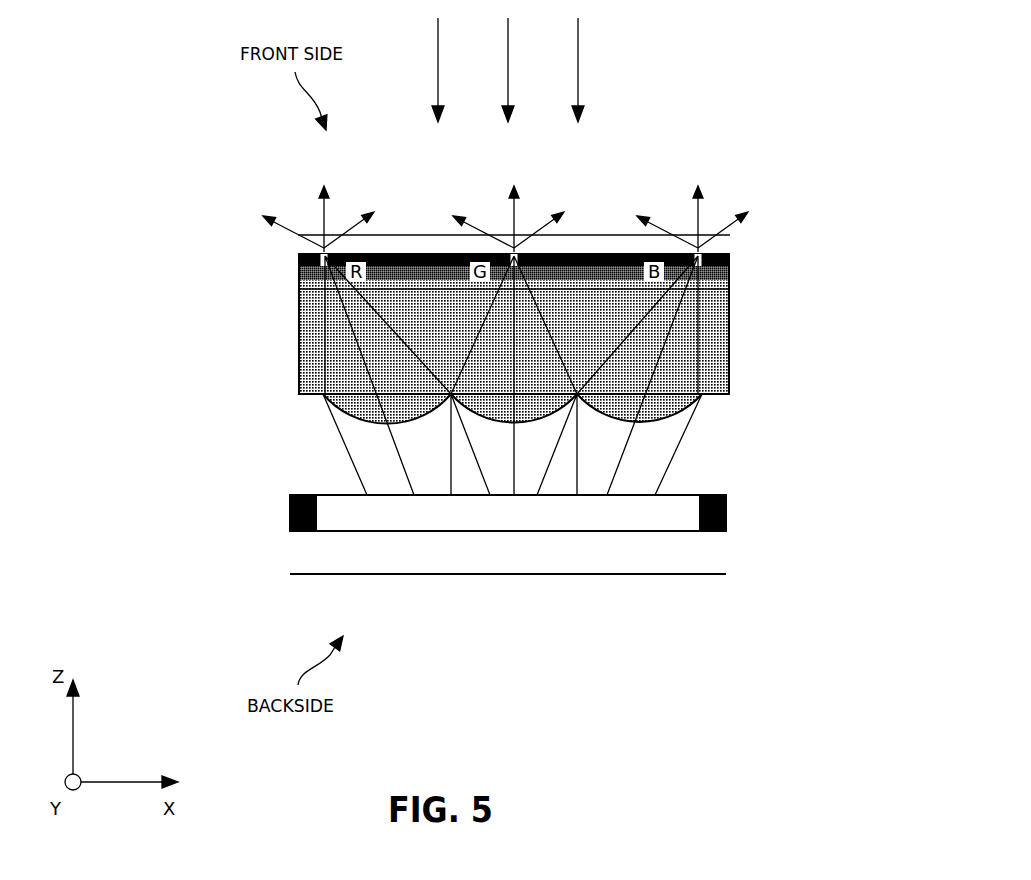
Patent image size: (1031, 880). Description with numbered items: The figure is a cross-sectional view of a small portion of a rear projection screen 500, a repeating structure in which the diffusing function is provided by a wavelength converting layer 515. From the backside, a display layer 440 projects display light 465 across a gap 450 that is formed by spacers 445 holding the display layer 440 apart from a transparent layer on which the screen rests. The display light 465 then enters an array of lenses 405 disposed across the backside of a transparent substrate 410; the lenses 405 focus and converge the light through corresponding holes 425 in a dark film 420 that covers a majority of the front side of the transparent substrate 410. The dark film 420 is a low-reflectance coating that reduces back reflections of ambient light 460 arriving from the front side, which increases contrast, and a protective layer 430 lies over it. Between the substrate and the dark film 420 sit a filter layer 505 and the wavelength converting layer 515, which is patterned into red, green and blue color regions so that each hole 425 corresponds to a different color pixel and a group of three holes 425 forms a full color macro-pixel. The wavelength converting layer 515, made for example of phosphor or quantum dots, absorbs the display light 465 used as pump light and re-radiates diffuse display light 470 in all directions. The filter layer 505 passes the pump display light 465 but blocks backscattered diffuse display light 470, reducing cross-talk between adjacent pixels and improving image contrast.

The ambient light 460 is at (578, 87).
The rear projection screen 500 is at (263, 452).
The dark film 420 is at (733, 259).
The holes 425 is at (328, 246).
The wavelength converting layer 515 is at (745, 272).
The filter layer 505 is at (729, 282).
The transparent substrate 410 is at (445, 334).
The array of lenses 405 is at (512, 409).
The display light 465 is at (344, 446).
The protective layer 430 is at (730, 240).
The diffuse display light 470 is at (318, 215).
The gap 450 is at (550, 520).
The spacers 445 is at (290, 515).
The display layer 440 is at (973, 456).